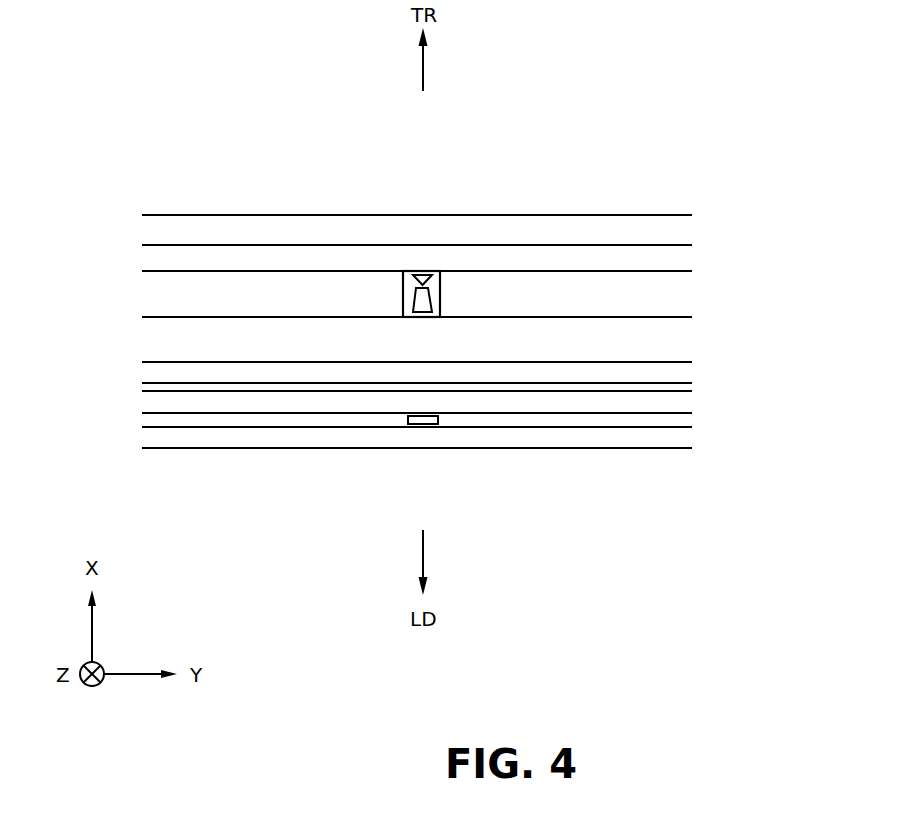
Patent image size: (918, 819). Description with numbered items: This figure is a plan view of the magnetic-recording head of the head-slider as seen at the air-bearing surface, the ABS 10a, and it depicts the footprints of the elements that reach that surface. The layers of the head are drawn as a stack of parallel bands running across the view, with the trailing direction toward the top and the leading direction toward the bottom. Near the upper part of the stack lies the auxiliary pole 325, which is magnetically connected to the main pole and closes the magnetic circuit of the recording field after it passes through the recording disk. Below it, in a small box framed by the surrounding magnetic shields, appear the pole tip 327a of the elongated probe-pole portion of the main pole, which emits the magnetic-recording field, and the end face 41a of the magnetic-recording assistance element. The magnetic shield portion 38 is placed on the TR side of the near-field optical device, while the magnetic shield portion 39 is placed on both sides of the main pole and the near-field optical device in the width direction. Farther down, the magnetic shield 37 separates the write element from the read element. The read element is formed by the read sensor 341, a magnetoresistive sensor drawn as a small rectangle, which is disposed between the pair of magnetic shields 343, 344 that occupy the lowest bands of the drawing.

The ABS 10a is at (212, 107).
The auxiliary pole 325 is at (612, 233).
The magnetic shield portion 38 is at (672, 262).
The magnetic shield portion 39 is at (665, 300).
The magnetic shield 37 is at (662, 370).
The pole tip 327a is at (421, 301).
The end face 41a is at (430, 281).
The read sensor 341 is at (425, 420).
The magnetic shield 343 is at (172, 437).
The magnetic shield 344 is at (210, 402).